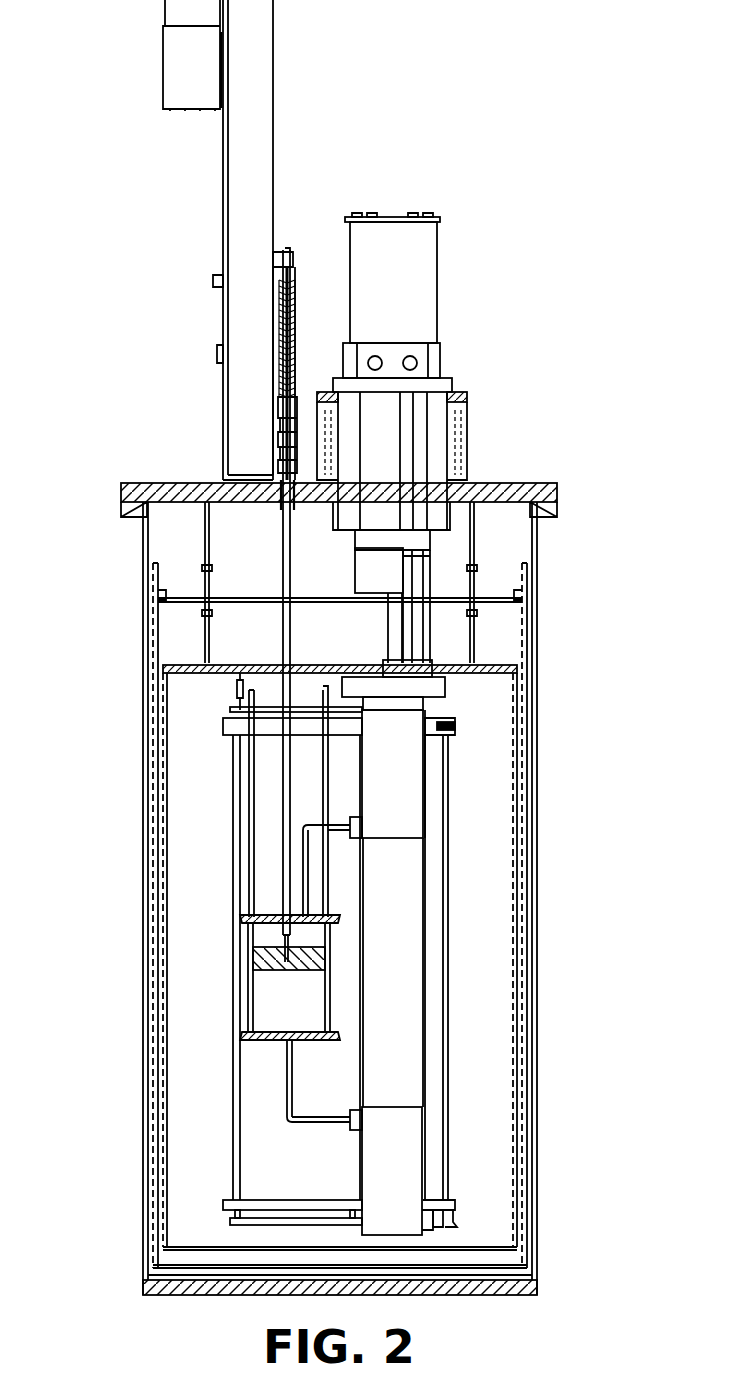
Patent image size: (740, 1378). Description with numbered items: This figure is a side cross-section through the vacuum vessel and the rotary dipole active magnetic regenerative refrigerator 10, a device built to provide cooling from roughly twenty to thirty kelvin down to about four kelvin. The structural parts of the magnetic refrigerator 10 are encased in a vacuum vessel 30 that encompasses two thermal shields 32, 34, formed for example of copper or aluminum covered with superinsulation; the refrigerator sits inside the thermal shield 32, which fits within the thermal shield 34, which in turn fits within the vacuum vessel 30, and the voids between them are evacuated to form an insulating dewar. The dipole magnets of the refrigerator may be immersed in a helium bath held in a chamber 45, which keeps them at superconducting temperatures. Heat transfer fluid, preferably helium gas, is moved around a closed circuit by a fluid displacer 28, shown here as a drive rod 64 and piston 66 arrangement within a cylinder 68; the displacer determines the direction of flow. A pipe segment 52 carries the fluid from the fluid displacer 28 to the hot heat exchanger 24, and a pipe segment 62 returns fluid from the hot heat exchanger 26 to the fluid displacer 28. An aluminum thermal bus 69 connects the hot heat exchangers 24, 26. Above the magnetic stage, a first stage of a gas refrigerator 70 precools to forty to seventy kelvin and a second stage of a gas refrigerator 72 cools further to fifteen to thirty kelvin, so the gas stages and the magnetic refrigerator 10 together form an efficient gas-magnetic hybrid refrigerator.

The rotary dipole active magnetic regenerative refrigerator 10 is at (352, 889).
The hot heat exchanger 24 is at (407, 796).
The hot heat exchanger 26 is at (407, 1186).
The fluid displacer 28 is at (248, 1005).
The vacuum vessel 30 is at (143, 1057).
The thermal shield 32 is at (162, 1150).
The thermal shield 34 is at (145, 1113).
The chamber 45 is at (233, 872).
The pipe segment 52 is at (303, 845).
The pipe segment 62 is at (325, 1125).
The drive rod 64 is at (278, 785).
The piston 66 is at (303, 975).
The cylinder 68 is at (248, 950).
The aluminum thermal bus 69 is at (407, 971).
The first stage of a gas refrigerator 70 is at (400, 583).
The second stage of a gas refrigerator 72 is at (430, 637).